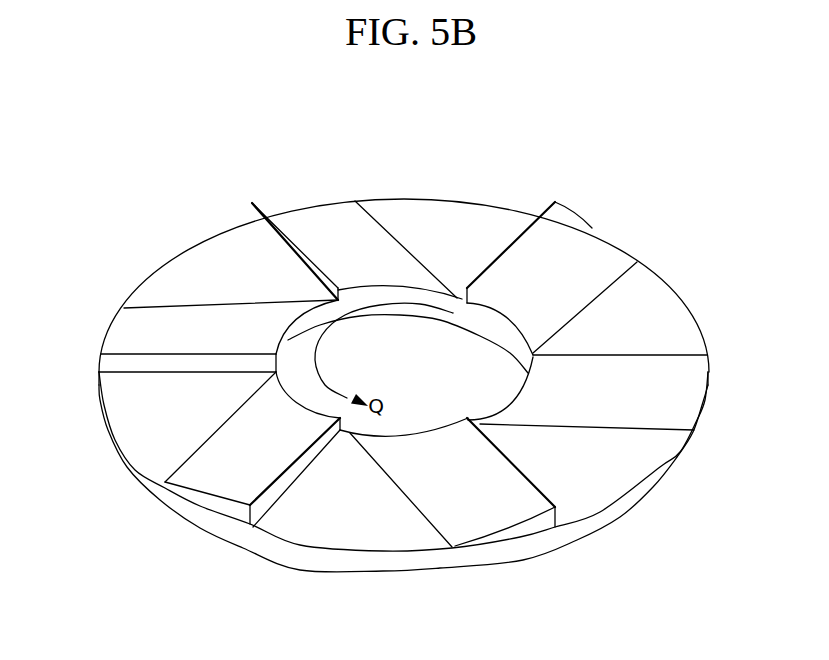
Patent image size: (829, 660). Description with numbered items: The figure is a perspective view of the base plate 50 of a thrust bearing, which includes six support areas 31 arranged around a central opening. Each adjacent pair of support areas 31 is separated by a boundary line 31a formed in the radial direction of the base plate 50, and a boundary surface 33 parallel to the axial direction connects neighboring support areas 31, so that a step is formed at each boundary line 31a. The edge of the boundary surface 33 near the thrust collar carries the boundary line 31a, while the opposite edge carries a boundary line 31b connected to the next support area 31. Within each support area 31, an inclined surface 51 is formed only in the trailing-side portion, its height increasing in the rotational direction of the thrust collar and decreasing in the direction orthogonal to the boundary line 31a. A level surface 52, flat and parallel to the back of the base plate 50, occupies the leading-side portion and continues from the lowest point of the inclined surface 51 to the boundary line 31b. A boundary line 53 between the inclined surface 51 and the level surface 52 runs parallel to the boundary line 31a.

The base plate 50 is at (594, 167).
The support area 31 is at (418, 210).
The boundary line 31a is at (258, 200).
The boundary line 31b is at (247, 220).
The boundary surface 33 is at (262, 214).
The inclined surface 51 is at (317, 223).
The level surface 52 is at (465, 233).
The boundary line 53 is at (373, 215).